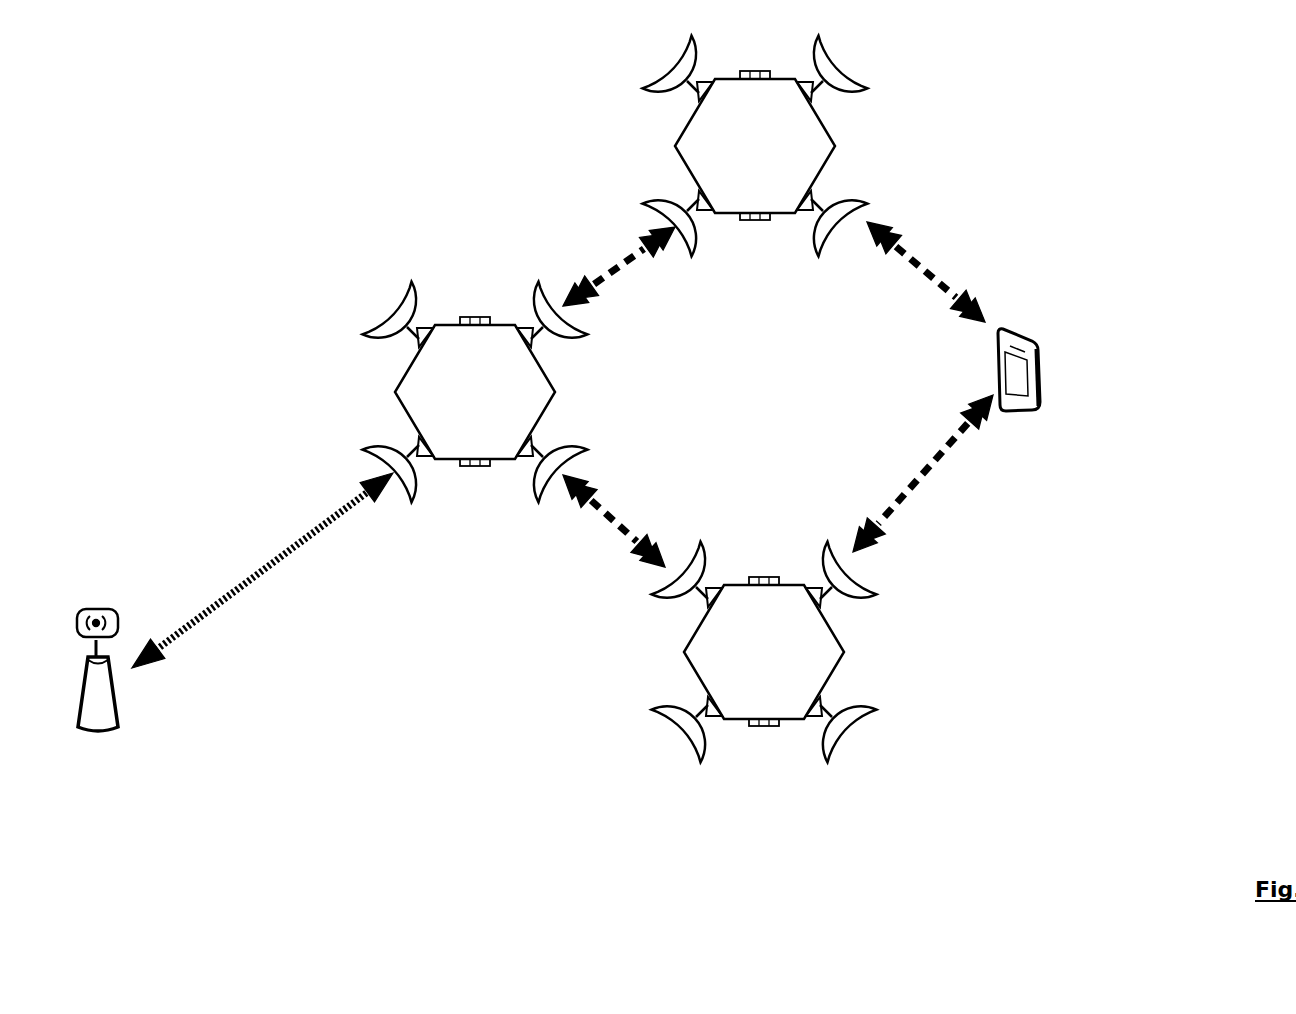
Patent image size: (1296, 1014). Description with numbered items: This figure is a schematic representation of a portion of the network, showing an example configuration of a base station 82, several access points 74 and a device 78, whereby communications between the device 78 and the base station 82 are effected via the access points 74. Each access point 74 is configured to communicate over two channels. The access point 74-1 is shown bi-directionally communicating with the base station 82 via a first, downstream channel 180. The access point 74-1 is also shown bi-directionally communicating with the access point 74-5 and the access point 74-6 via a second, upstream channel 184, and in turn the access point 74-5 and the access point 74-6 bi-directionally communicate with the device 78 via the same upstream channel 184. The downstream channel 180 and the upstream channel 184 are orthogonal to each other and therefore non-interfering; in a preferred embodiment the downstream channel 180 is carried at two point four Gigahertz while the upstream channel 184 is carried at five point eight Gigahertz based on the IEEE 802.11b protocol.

The access points 74 is at (778, 399).
The access point 74-1 is at (475, 392).
The access point 74-5 is at (755, 146).
The access point 74-6 is at (764, 652).
The device 78 is at (1056, 348).
The base station 82 is at (109, 745).
The downstream channel 180 is at (283, 572).
The upstream channel 184 is at (636, 291).